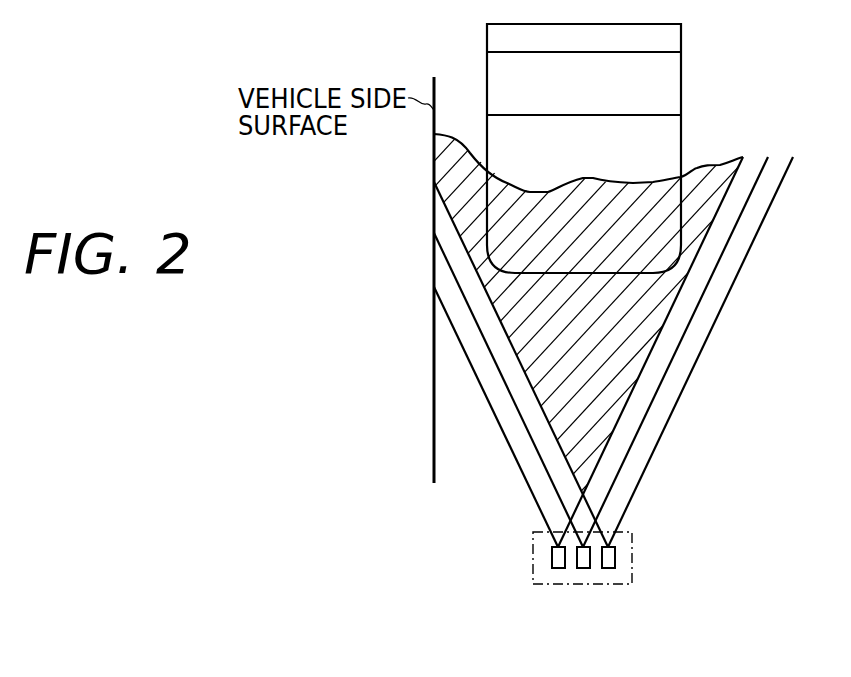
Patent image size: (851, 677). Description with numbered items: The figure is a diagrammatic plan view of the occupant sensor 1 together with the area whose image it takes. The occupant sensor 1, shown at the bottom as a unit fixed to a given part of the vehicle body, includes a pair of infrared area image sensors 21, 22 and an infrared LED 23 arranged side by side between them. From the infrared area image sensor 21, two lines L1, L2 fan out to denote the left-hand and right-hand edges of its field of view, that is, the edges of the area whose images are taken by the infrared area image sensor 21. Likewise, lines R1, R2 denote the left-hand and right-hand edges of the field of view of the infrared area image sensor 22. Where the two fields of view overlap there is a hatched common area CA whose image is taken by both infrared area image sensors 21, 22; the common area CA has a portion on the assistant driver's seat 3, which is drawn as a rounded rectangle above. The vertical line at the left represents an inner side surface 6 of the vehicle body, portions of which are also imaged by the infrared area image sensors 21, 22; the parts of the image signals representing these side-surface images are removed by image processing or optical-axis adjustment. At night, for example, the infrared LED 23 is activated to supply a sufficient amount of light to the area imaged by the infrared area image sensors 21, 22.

The occupant sensor 1 is at (641, 537).
The infrared area image sensor 21 is at (558, 568).
The infrared area image sensor 22 is at (608, 568).
The infrared LED 23 is at (583, 568).
The assistant driver's seat 3 is at (681, 132).
The inner side surface of the vehicle body 6 is at (434, 427).
The common area CA is at (645, 298).
The left-hand edge of field of view of infrared area image sensor 21 L1 is at (478, 380).
The right-hand edge of field of view of infrared area image sensor 21 L2 is at (600, 452).
The left-hand edge of field of view of infrared area image sensor 22 R1 is at (552, 417).
The right-hand edge of field of view of infrared area image sensor 22 R2 is at (705, 347).